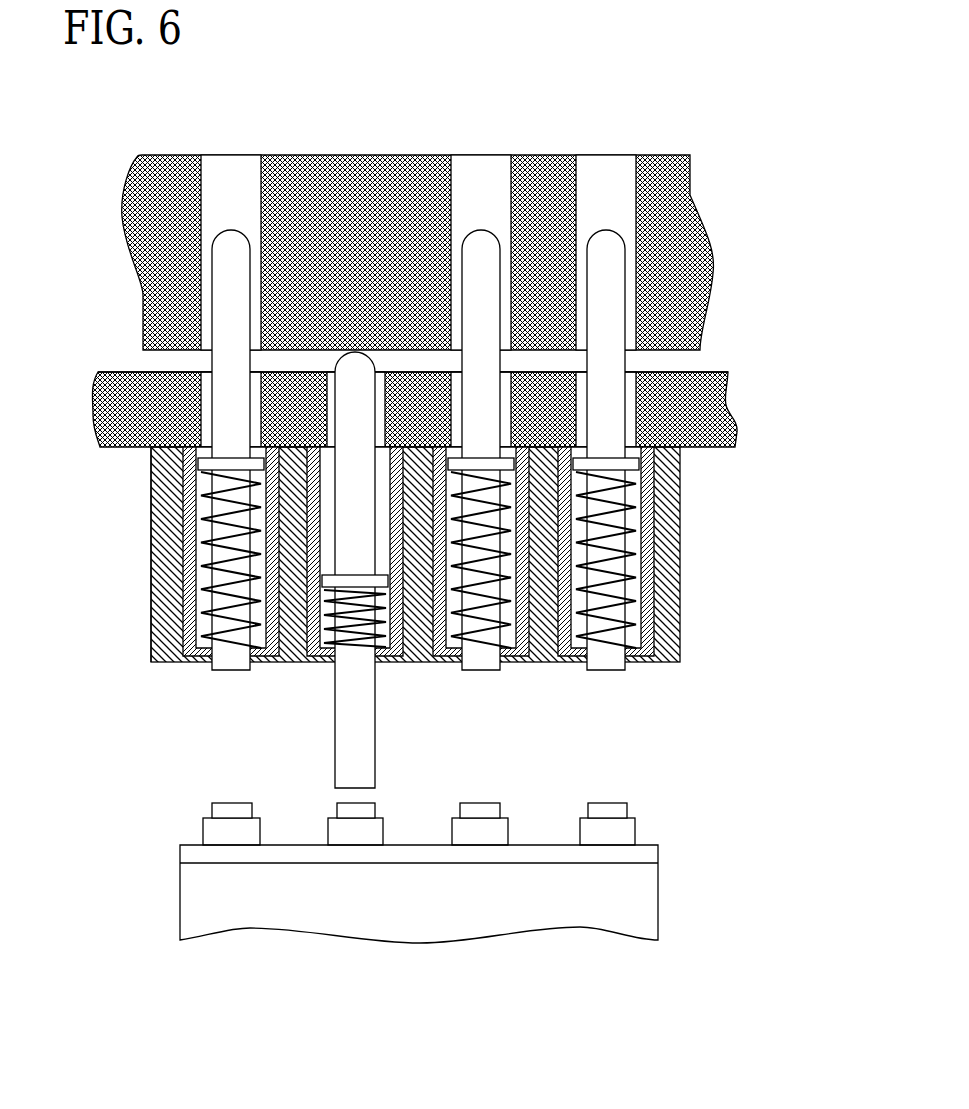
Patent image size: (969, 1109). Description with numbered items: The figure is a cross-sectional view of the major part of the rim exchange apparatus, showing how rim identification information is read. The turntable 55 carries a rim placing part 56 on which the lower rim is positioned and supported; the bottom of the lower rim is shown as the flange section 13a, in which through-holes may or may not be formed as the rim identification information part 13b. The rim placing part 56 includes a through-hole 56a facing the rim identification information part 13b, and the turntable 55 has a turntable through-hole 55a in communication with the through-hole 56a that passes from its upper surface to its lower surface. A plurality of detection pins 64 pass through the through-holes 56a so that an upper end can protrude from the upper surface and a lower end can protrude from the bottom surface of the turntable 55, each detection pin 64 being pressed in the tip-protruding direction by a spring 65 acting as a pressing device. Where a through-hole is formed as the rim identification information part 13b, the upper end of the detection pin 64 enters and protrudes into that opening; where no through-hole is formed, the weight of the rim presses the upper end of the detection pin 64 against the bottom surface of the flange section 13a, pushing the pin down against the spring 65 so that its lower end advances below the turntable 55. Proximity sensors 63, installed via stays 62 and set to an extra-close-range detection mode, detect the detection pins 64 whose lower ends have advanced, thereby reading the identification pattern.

The flange section 13a is at (713, 313).
The rim identification information part 13b is at (227, 167).
The rim placing part 56 is at (117, 370).
The through-hole 56a is at (728, 391).
The turntable 55 is at (682, 625).
The turntable through-hole 55a is at (152, 528).
The spring 65 is at (185, 578).
The detection pin 64 is at (227, 248).
The proximity sensor 63 is at (213, 830).
The stay 62 is at (248, 918).